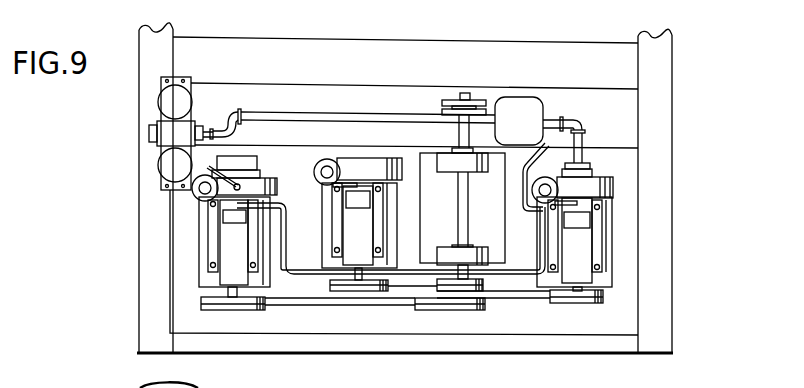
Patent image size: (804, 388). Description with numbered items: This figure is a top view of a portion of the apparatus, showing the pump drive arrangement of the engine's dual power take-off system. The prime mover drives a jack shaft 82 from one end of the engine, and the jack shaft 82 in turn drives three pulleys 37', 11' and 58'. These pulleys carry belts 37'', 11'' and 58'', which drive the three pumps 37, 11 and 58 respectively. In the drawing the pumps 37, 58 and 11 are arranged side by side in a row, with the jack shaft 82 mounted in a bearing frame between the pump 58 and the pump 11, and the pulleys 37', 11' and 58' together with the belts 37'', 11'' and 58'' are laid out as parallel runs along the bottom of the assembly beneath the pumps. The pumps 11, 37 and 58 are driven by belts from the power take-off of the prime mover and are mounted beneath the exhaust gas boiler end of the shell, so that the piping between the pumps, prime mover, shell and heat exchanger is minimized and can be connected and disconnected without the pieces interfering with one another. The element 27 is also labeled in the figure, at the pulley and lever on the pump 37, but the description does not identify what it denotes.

The pump 11 is at (614, 227).
The pulley 11' is at (493, 311).
The belt 11'' is at (565, 310).
The pulley and lever 27 is at (199, 198).
The pump 37 is at (188, 226).
The pulley 37' is at (450, 316).
The belt 37'' is at (308, 315).
The pump 58 is at (342, 219).
The pulley 58' is at (393, 210).
The belt 58'' is at (383, 307).
The jack shaft 82 is at (465, 227).